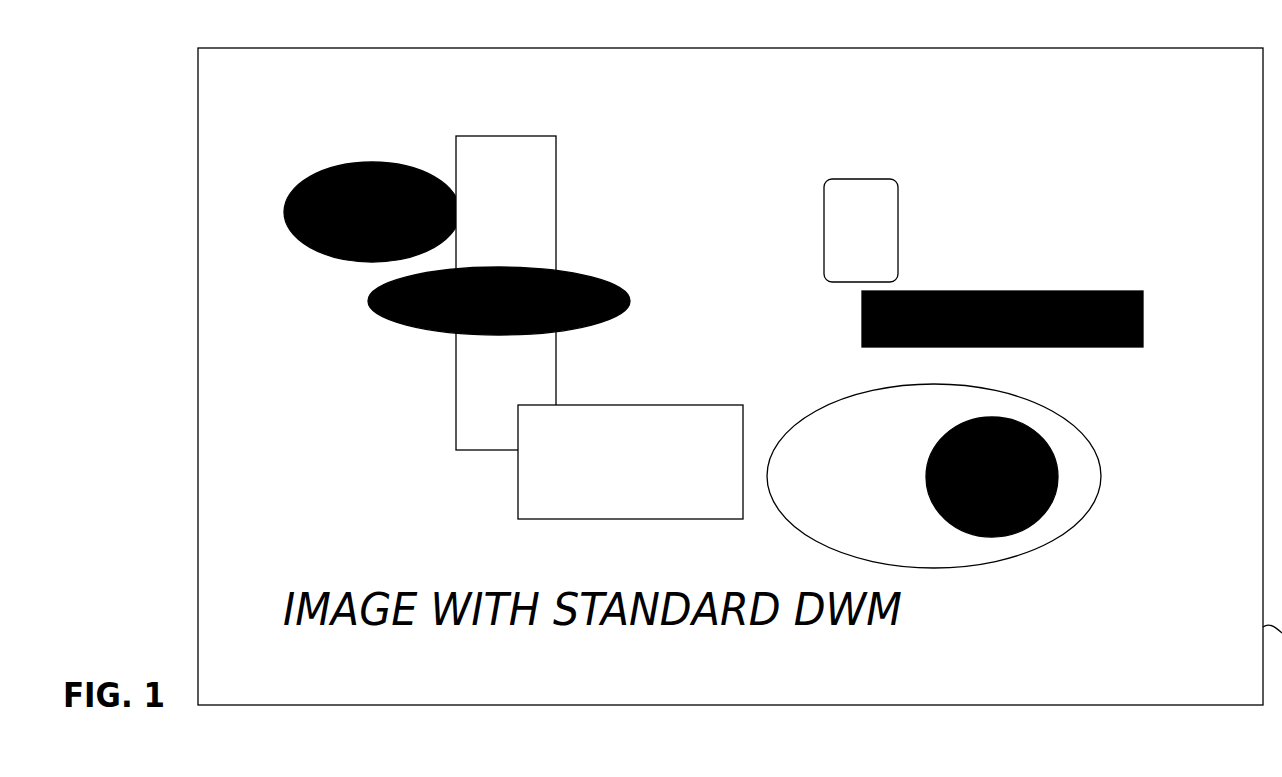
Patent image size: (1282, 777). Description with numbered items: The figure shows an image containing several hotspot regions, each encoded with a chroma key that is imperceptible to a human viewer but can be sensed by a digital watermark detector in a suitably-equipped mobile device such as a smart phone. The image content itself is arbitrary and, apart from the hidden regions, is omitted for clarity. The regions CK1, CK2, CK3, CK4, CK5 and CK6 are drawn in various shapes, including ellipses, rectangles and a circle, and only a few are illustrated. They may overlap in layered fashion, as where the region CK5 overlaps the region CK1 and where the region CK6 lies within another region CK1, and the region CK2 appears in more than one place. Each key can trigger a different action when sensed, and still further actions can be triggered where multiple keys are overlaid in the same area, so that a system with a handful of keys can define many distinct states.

The chroma key region CK1 is at (778, 352).
The chroma key region CK2 is at (713, 254).
The chroma key region CK3 is at (630, 462).
The chroma key region CK4 is at (861, 230).
The chroma key region CK5 is at (499, 301).
The chroma key region CK6 is at (992, 477).